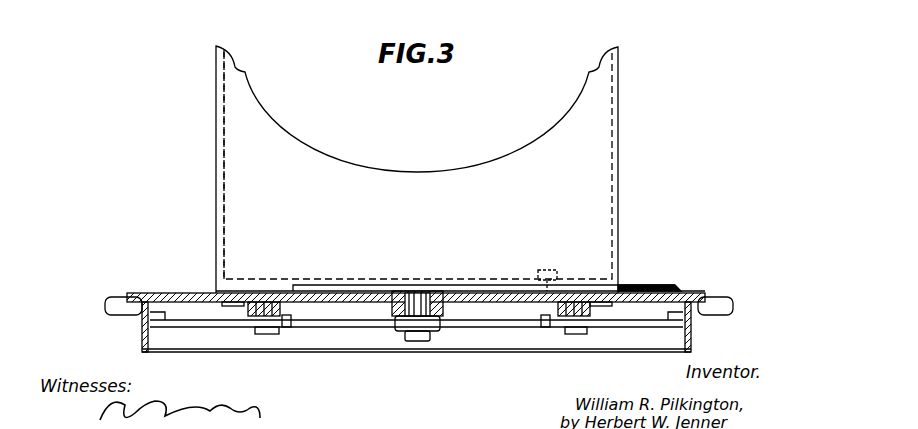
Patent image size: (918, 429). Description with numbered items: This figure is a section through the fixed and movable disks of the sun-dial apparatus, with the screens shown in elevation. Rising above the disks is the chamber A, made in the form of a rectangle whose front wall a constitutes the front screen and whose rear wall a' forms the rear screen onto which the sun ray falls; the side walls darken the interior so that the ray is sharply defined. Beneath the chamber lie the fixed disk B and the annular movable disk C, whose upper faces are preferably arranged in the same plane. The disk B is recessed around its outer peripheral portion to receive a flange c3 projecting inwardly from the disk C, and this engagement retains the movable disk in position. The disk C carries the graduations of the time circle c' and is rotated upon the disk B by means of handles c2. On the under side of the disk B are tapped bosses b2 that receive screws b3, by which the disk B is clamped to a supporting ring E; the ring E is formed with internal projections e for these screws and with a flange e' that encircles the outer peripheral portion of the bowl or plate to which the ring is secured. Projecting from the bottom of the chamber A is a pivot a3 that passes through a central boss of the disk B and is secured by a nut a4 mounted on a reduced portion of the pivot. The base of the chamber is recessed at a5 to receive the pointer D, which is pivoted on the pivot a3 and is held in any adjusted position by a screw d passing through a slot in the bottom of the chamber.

The front wall a is at (460, 169).
The rear wall a' is at (197, 165).
The pivot a3 is at (426, 291).
The nut a4 is at (415, 342).
The recess a5 is at (330, 293).
The chamber A is at (328, 211).
The fixed disk B is at (346, 303).
The tapped bosses b2 is at (259, 302).
The screws b3 is at (575, 335).
The movable disk C is at (181, 293).
The graduations of the time circle c' is at (113, 284).
The handles c2 is at (718, 306).
The flange c3 is at (620, 365).
The screw d is at (546, 270).
The pointer D is at (634, 285).
The internal projections e is at (412, 351).
The flange e' is at (418, 358).
The supporting ring E is at (481, 342).